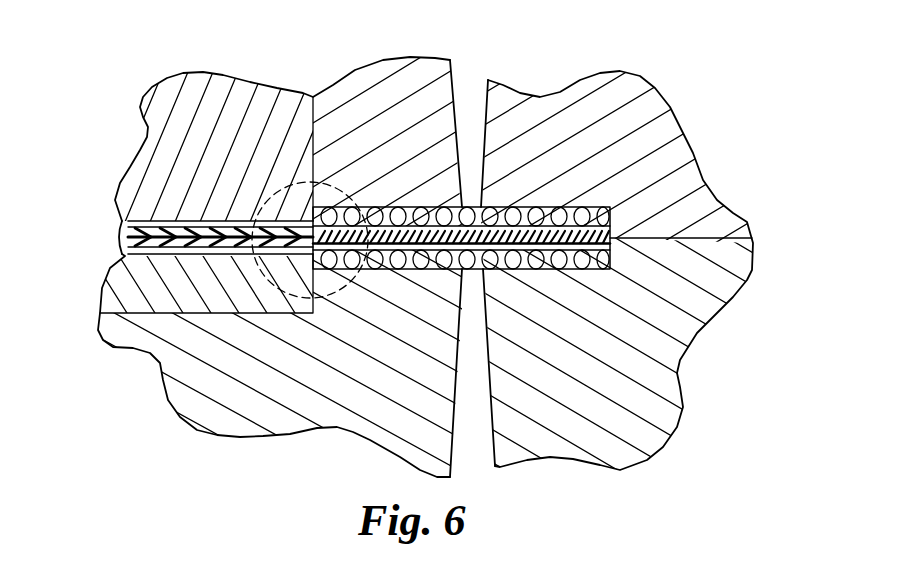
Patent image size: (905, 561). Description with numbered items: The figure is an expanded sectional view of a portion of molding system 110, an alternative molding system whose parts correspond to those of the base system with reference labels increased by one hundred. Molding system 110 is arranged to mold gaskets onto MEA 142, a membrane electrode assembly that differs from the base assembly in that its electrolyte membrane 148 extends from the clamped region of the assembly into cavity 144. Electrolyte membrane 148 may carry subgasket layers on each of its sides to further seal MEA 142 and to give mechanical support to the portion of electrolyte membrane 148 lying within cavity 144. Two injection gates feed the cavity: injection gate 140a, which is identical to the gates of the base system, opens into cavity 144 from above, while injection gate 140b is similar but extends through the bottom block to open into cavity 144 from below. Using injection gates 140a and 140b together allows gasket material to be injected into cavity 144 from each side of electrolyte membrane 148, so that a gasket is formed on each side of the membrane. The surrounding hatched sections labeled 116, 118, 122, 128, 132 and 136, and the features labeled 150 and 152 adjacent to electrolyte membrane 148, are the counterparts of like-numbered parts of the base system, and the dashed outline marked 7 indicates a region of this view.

The molding system 110 is at (198, 42).
The first housing block 116 is at (172, 112).
The second housing block 118 is at (110, 293).
The housing 122 is at (387, 82).
The housing portion 128 is at (683, 137).
The lower housing body 132 is at (245, 425).
The housing body portion 136 is at (703, 320).
The injection gate 140a is at (489, 70).
The injection gate 140b is at (498, 474).
The MEA 142 is at (142, 210).
The cavity 144 is at (622, 228).
The electrolyte membrane 148 is at (130, 239).
The upper layer 150 is at (127, 225).
The lower layer 152 is at (127, 253).
The detail view circle 7 is at (347, 295).